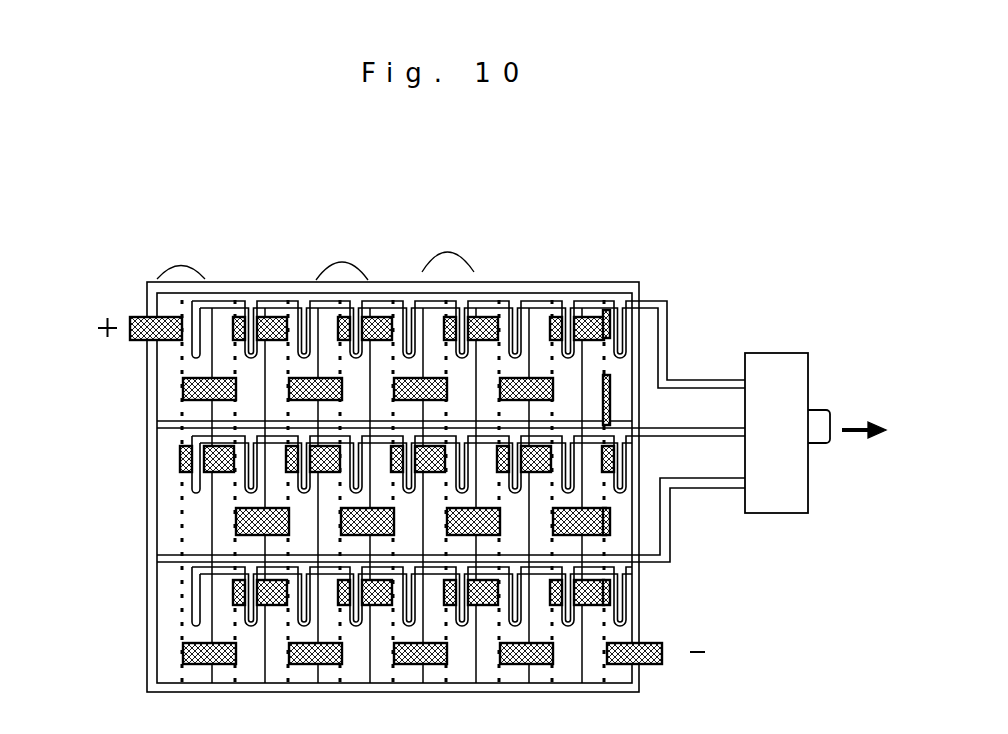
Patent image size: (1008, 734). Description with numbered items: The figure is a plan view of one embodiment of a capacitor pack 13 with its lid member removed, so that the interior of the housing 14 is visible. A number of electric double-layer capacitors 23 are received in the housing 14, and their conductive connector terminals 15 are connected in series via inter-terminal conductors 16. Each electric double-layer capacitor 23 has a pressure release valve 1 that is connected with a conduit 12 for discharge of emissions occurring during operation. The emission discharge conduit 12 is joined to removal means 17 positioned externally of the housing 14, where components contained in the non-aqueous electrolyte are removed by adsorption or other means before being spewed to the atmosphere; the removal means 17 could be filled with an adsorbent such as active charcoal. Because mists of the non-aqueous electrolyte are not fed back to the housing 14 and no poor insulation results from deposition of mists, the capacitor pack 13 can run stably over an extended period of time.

The pressure release valve 1 is at (192, 365).
The conduit 12 is at (240, 303).
The capacitor pack 13 is at (100, 161).
The housing 14 is at (150, 522).
The conductive connector terminals 15 is at (180, 318).
The inter-terminal conductors 16 is at (273, 313).
The removal means 17 is at (775, 365).
The electric double-layer capacitors 23 is at (182, 267).